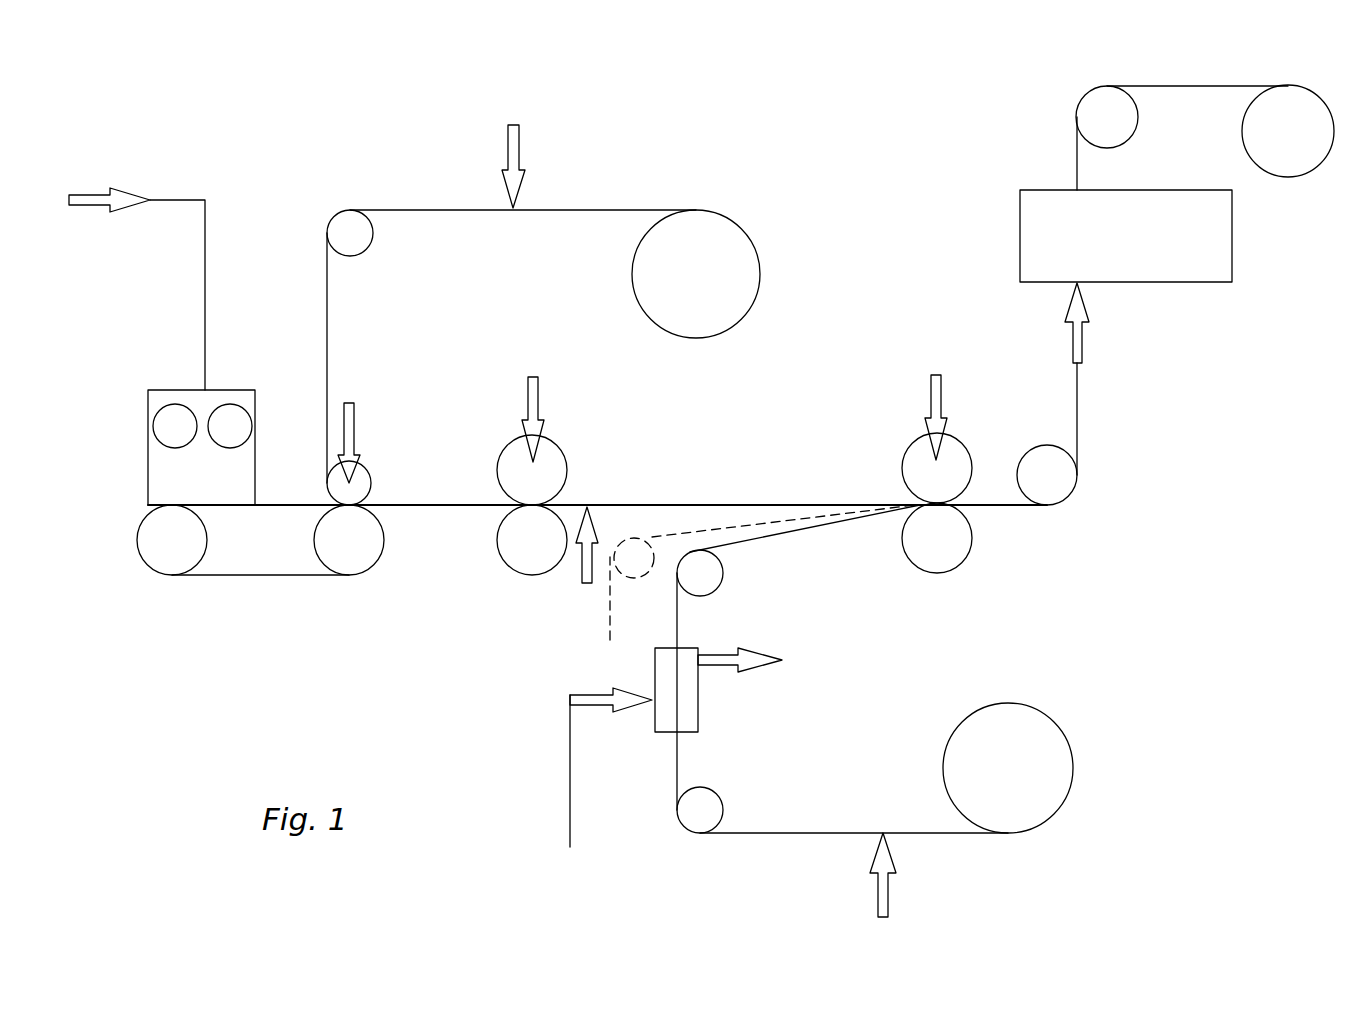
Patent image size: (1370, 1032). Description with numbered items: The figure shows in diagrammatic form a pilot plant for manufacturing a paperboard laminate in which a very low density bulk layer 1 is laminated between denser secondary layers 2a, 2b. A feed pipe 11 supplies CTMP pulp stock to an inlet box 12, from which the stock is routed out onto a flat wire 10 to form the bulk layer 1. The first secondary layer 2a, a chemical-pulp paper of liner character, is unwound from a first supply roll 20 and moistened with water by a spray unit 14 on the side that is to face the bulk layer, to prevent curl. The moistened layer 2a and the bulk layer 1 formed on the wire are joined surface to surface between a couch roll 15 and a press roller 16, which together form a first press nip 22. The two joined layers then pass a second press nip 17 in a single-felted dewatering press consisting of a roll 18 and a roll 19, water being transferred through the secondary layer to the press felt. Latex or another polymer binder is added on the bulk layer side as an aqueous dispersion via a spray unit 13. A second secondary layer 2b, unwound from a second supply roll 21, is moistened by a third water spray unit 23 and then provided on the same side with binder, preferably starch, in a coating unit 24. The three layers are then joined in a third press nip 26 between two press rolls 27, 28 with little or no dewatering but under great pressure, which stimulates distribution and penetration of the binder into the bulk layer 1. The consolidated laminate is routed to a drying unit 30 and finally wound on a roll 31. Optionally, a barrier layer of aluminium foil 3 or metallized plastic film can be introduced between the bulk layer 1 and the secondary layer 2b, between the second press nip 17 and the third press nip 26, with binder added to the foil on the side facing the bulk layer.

The bulk layer 1 is at (442, 507).
The first secondary layer 2a is at (415, 208).
The second secondary layer 2b is at (762, 538).
The aluminium foil 3 is at (835, 513).
The flat wire 10 is at (245, 577).
The feed pipe 11 is at (205, 263).
The inlet box 12 is at (165, 388).
The spray unit 13 is at (577, 573).
The spray unit 14 is at (520, 142).
The couch roll 15 is at (349, 577).
The press roller 16 is at (363, 462).
The second press nip 17 is at (585, 495).
The roll 18 is at (532, 575).
The roll 19 is at (560, 450).
The first supply roll 20 is at (738, 227).
The second supply roll 21 is at (1073, 767).
The first press nip 22 is at (388, 497).
The third water spray unit 23 is at (875, 898).
The coating unit 24 is at (698, 718).
The third press nip 26 is at (898, 495).
The press roll 27 is at (965, 553).
The press roll 28 is at (965, 448).
The drying unit 30 is at (1233, 238).
The roll 31 is at (1317, 90).